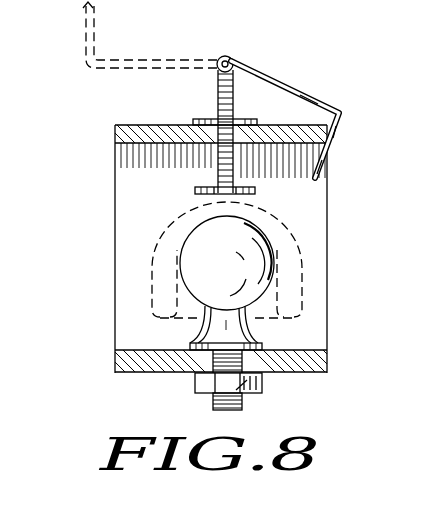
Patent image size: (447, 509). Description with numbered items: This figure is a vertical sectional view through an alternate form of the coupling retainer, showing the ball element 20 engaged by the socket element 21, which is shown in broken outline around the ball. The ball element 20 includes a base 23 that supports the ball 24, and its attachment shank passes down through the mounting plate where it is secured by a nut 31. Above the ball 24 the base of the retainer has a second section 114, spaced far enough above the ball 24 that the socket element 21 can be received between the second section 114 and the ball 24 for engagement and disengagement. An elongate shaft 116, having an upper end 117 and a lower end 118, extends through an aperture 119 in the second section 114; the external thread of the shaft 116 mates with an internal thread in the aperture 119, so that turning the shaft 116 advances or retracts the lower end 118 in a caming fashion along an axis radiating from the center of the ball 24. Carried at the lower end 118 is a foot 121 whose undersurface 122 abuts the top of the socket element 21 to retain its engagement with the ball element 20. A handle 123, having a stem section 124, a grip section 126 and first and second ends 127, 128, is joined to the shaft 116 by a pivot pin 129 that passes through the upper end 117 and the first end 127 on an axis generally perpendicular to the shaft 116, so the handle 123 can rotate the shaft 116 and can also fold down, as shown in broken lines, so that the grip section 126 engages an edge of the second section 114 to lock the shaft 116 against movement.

The ball element 20 is at (190, 330).
The socket element 21 is at (146, 253).
The base 23 is at (258, 336).
The ball 24 is at (270, 290).
The nut 31 is at (196, 383).
The second section 114 is at (118, 136).
The elongate shaft 116 is at (218, 96).
The upper end 117 is at (219, 57).
The lower end 118 is at (218, 164).
The aperture 119 is at (193, 124).
The foot 121 is at (257, 186).
The undersurface 122 is at (244, 198).
The handle 123 is at (144, 59).
The stem section 124 is at (164, 59).
The grip section 126 is at (96, 43).
The first end 127 is at (227, 56).
The second end 128 is at (85, 6).
The pivot pin 129 is at (233, 61).